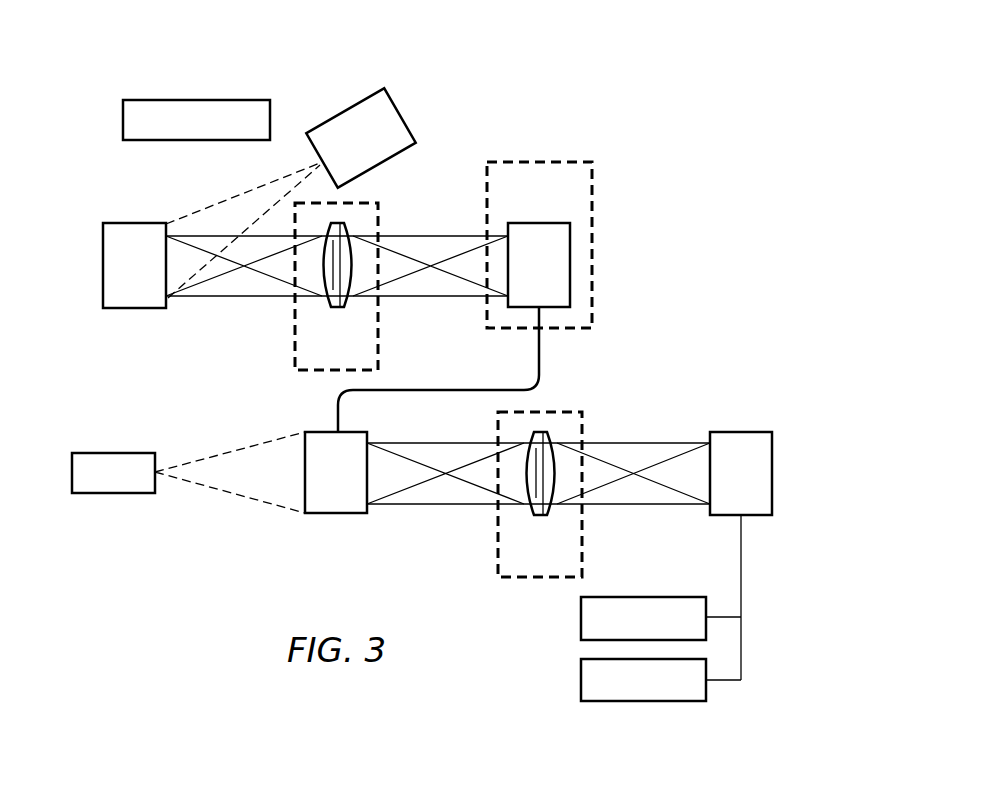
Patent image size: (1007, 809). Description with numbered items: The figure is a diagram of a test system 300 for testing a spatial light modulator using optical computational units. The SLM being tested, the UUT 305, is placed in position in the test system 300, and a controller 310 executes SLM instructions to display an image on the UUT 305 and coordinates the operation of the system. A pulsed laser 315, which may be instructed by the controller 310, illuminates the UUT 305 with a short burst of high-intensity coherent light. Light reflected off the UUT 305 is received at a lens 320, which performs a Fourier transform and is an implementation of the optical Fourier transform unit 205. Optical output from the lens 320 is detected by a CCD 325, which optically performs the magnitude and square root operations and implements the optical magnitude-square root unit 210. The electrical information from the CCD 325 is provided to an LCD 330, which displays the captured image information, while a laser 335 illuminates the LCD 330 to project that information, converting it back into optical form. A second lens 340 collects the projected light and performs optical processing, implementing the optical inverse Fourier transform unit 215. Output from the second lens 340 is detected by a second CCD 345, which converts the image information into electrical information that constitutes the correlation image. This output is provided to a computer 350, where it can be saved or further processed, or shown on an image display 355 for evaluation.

The test system 300 is at (690, 178).
The controller 310 is at (197, 100).
The pulsed laser 315 is at (347, 112).
The unit under test (UUT) 305 is at (133, 308).
The optical Fourier transform unit 205 is at (286, 327).
The lens 320 is at (337, 308).
The optical magnitude-square root unit 210 is at (552, 156).
The charge coupled device (CCD) 325 is at (538, 223).
The laser 335 is at (113, 493).
The liquid crystal display (LCD) 330 is at (330, 513).
The optical inverse Fourier transform unit 215 is at (591, 535).
The second lens 340 is at (540, 515).
The second CCD 345 is at (772, 472).
The computer 350 is at (581, 622).
The image display 355 is at (643, 701).